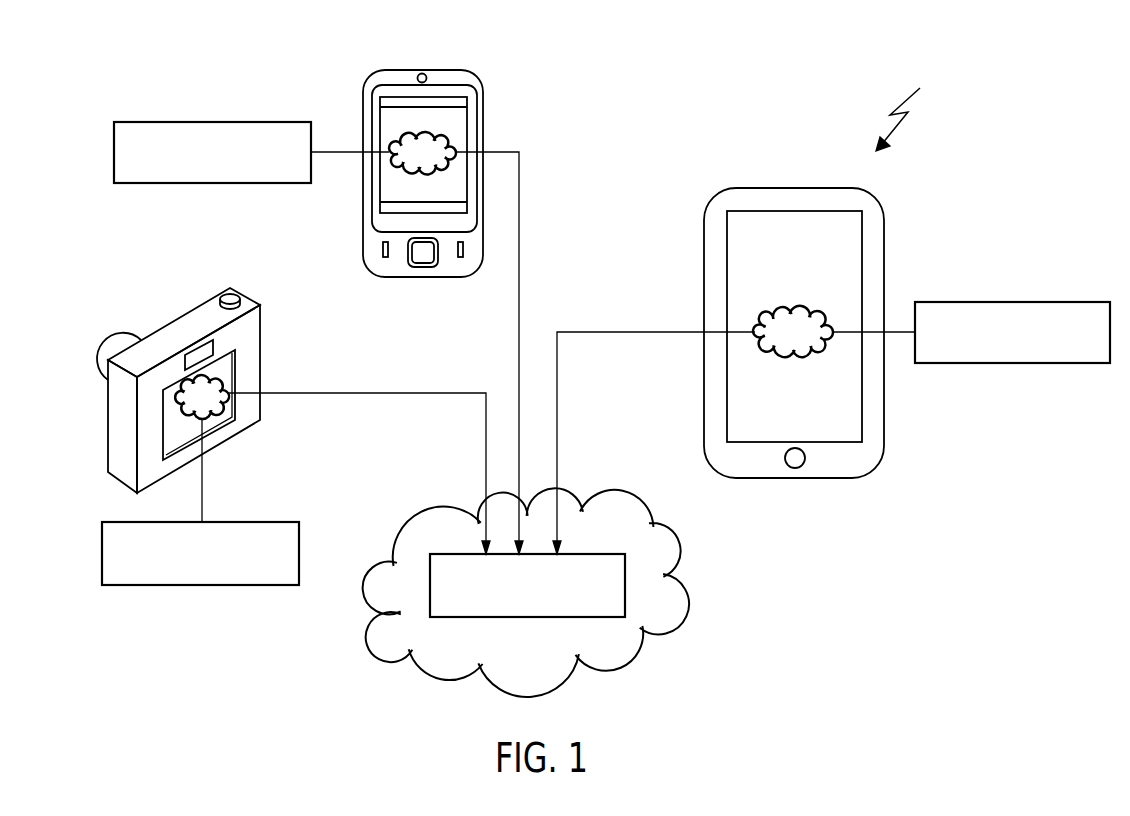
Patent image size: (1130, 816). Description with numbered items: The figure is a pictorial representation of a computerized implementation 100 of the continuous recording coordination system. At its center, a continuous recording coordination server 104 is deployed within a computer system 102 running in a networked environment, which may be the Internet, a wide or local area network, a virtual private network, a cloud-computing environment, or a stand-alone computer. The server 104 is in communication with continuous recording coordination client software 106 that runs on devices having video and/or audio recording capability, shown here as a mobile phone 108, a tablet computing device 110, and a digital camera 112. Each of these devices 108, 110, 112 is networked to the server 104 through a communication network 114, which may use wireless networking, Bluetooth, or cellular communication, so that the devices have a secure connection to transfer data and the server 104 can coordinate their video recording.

The computerized implementation 100 is at (914, 105).
The computer system 102 is at (610, 488).
The continuous recording coordination server 104 is at (577, 553).
The continuous recording coordination client software 106 is at (200, 122).
The mobile phone 108 is at (414, 70).
The tablet computing device 110 is at (782, 188).
The digital camera 112 is at (261, 350).
The communication network 114 is at (520, 215).